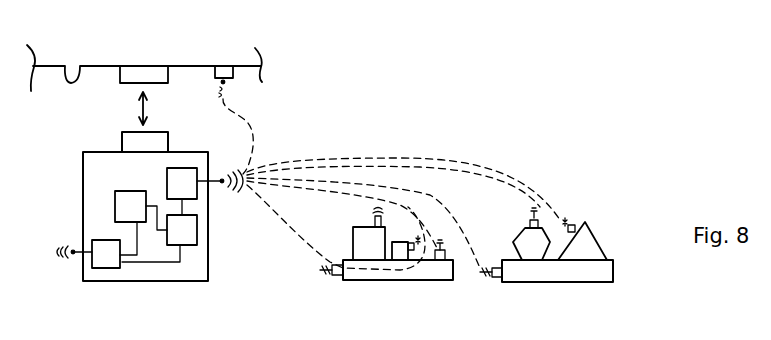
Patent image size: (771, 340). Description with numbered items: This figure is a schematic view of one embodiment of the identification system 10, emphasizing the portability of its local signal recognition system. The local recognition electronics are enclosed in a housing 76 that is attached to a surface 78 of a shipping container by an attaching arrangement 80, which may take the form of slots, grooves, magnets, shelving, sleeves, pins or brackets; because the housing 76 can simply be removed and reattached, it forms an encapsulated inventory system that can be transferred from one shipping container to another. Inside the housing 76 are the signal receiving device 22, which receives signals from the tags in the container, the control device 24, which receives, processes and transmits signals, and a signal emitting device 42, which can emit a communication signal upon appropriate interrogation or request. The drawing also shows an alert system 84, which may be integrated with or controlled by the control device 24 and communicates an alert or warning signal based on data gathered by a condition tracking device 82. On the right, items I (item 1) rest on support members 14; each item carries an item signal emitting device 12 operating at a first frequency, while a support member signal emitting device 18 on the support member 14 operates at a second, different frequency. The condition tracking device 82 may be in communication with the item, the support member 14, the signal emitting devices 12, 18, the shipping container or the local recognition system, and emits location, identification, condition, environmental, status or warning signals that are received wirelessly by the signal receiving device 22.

The item 1 is at (600, 242).
The identification system 10 is at (383, 114).
The item signal emitting device 12 is at (573, 225).
The support member 14 is at (393, 280).
The support member signal emitting device 18 is at (497, 280).
The signal receiving device 22 is at (205, 191).
The control device 24 is at (159, 238).
The signal emitting device 42 is at (88, 254).
The housing 76 is at (208, 247).
The surface 78 is at (80, 68).
The attaching arrangement 80 is at (99, 109).
The condition tracking device 82 is at (228, 66).
The alert system 84 is at (115, 202).